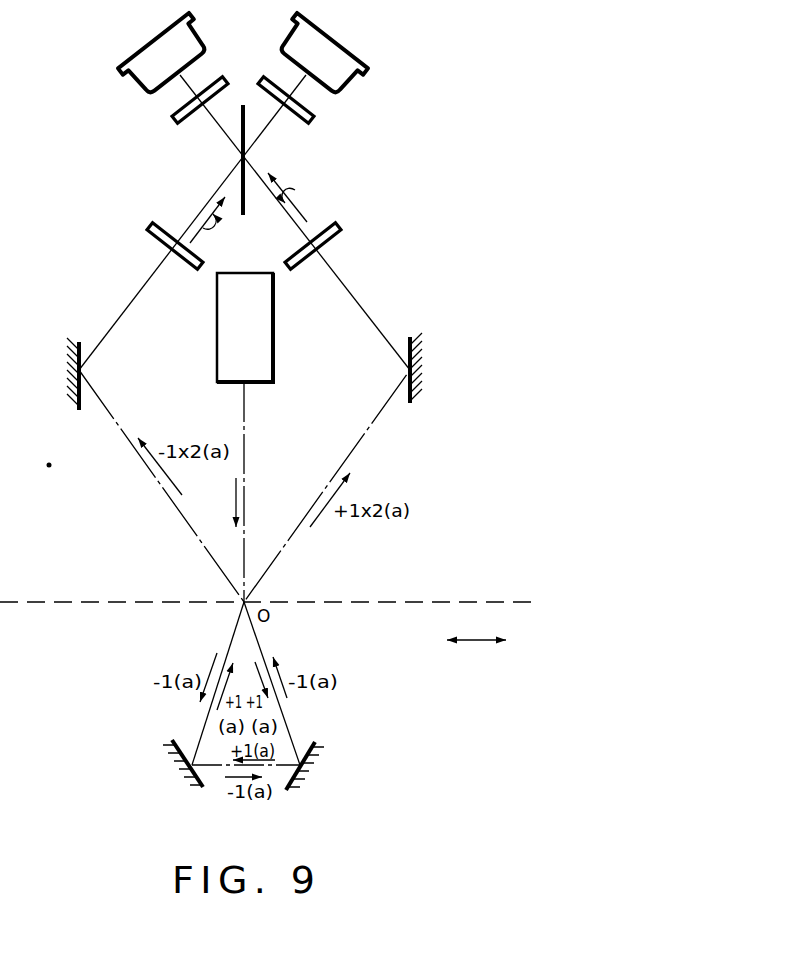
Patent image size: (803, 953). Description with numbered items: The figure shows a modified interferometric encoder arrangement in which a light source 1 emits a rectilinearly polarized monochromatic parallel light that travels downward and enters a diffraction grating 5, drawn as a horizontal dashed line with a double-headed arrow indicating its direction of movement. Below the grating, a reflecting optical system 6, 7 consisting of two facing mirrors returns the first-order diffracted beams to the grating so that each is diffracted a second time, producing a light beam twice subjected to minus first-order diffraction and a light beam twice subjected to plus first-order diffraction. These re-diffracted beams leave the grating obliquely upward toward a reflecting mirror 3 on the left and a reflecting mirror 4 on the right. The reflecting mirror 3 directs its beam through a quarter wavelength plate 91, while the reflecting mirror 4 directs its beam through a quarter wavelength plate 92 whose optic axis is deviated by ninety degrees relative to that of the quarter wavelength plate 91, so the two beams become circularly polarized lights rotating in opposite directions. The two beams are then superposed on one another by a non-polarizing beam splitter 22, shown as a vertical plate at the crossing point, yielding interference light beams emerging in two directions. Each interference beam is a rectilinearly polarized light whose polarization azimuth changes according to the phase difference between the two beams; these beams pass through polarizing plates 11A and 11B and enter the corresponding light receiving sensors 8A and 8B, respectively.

The light source 1 is at (273, 345).
The reflecting mirror 3 is at (63, 362).
The reflecting mirror 4 is at (417, 372).
The diffraction grating 5 is at (470, 602).
The reflecting optical system 6 is at (173, 757).
The reflecting optical system 7 is at (300, 778).
The light receiving sensor 8A is at (203, 32).
The light receiving sensor 8B is at (357, 40).
The polarizing plate 11A is at (173, 118).
The polarizing plate 11B is at (314, 124).
The non-polarizing beam splitter 22 is at (245, 214).
The quarter wavelength plate 91 is at (150, 232).
The quarter wavelength plate 92 is at (337, 238).